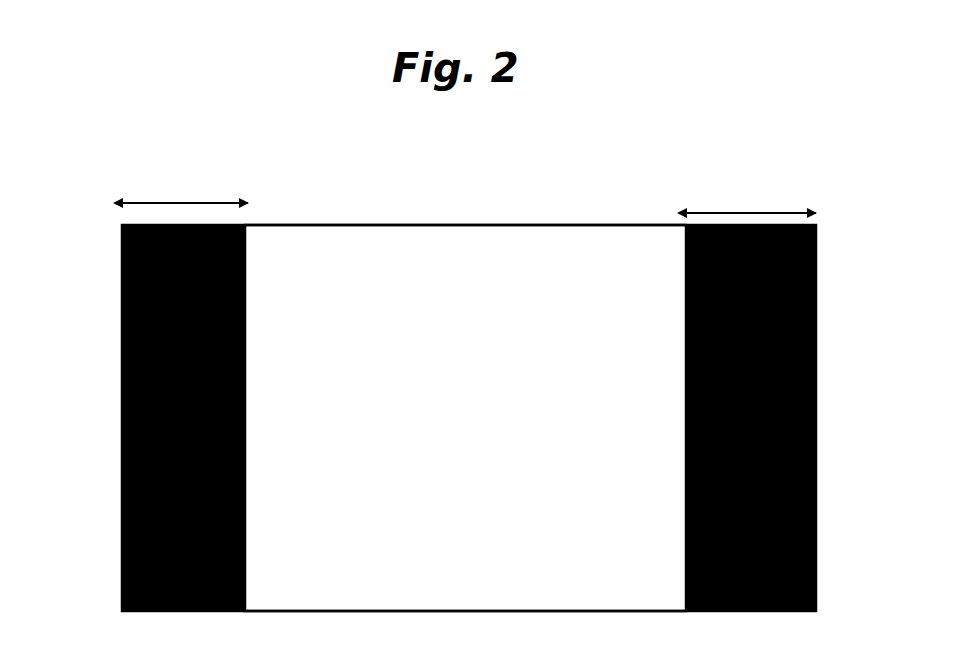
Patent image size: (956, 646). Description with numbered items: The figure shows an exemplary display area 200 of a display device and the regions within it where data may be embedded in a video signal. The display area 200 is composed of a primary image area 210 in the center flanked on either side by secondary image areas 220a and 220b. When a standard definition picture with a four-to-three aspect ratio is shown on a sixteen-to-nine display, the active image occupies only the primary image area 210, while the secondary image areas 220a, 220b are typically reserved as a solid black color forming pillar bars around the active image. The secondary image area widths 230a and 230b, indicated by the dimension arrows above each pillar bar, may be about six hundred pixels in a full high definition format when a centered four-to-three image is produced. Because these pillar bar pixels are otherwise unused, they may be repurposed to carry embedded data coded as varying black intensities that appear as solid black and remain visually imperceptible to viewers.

The display area 200 is at (340, 168).
The primary image area 210 is at (595, 237).
The secondary image area 220a is at (815, 552).
The secondary image area 220b is at (121, 553).
The secondary image area width 230a is at (745, 213).
The secondary image area width 230b is at (180, 200).